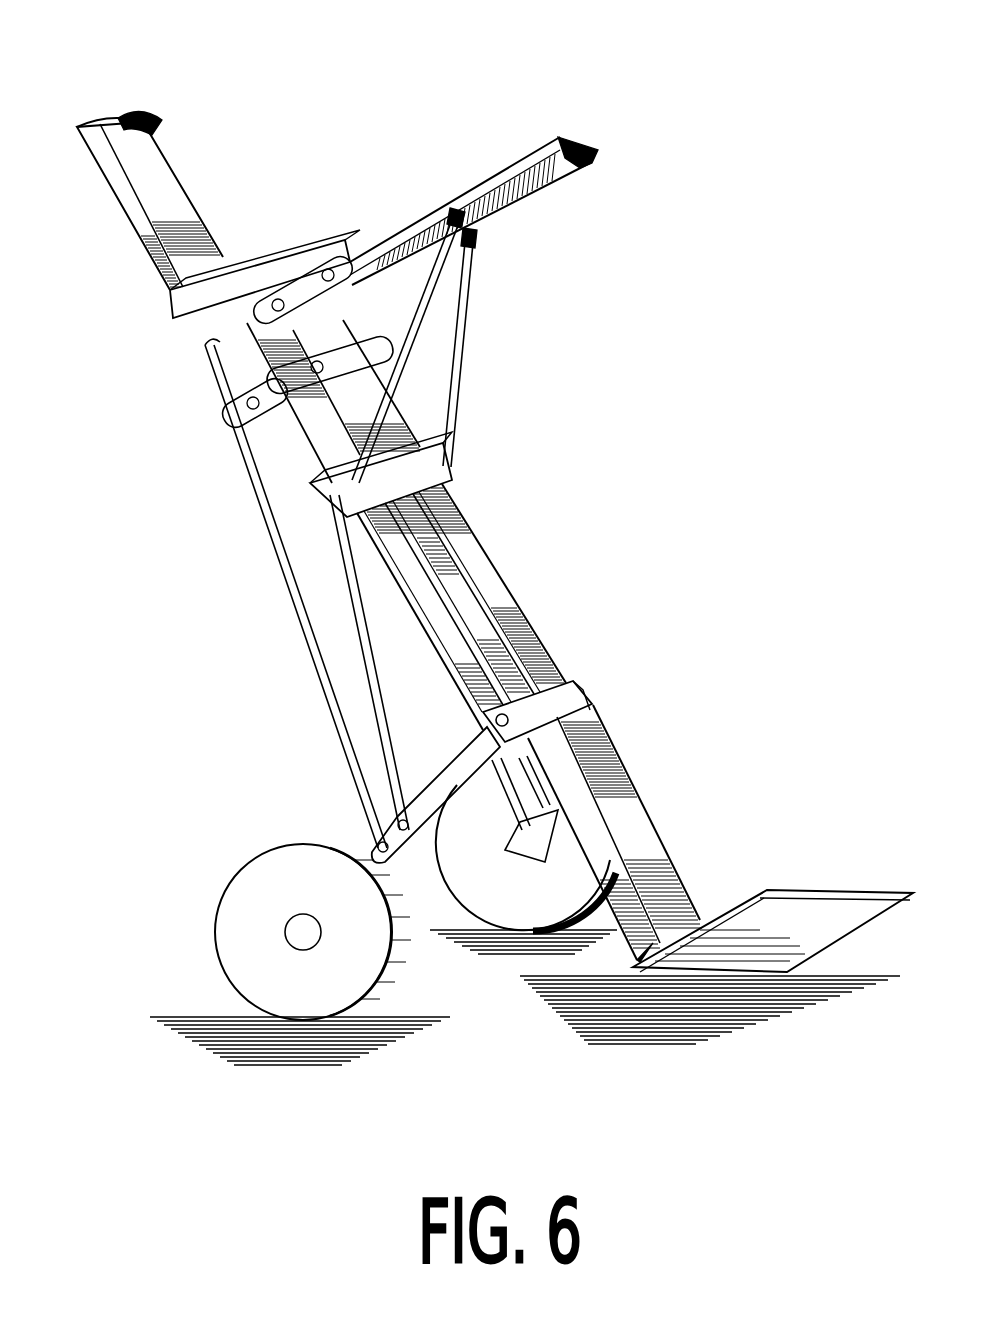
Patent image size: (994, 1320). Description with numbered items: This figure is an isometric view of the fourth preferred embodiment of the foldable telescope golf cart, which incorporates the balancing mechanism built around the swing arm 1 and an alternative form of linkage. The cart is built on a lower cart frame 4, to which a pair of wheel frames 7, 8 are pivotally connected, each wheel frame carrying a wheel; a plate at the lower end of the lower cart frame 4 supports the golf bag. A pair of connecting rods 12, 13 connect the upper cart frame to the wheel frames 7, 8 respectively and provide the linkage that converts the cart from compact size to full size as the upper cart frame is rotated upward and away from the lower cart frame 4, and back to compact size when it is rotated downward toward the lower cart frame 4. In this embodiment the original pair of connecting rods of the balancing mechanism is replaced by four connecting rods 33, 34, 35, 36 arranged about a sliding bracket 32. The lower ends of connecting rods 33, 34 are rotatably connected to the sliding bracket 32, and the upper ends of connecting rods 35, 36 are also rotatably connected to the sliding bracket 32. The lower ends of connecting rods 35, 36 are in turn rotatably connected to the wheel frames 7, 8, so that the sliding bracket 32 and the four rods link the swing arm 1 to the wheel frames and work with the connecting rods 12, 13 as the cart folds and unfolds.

The swing arm 1 is at (592, 139).
The connecting rod 33 is at (425, 308).
The connecting rod 34 is at (465, 363).
The sliding bracket 32 is at (453, 473).
The lower cart frame 4 is at (487, 556).
The connecting rod 13 is at (427, 622).
The connecting rod 36 is at (553, 800).
The wheel frame 8 is at (535, 857).
The connecting rod 12 is at (290, 592).
The connecting rod 35 is at (362, 650).
The wheel frame 7 is at (475, 760).